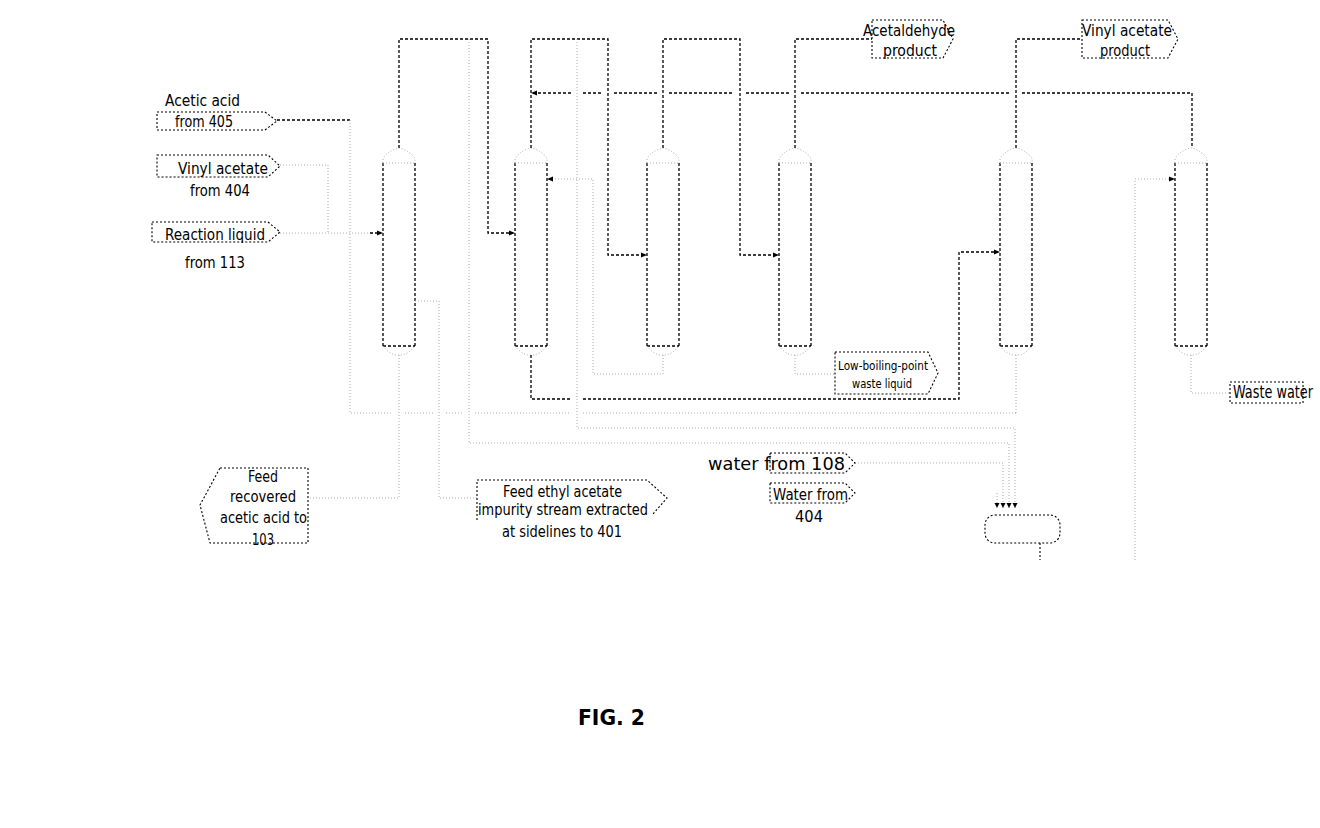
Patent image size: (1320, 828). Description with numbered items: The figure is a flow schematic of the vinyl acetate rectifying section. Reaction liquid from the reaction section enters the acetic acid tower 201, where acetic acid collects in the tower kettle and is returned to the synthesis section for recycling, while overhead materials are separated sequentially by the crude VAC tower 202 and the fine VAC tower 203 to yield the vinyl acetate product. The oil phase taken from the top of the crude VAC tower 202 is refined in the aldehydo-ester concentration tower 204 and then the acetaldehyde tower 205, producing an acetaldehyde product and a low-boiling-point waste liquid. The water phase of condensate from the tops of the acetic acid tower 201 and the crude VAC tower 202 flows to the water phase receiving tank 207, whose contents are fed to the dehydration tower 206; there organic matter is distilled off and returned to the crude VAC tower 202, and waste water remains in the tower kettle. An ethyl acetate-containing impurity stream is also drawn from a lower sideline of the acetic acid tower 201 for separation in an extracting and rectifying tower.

The acetic acid tower 201 is at (372, 233).
The crude VAC tower 202 is at (509, 233).
The fine VAC tower 203 is at (994, 252).
The aldehydo-ester concentration tower 204 is at (641, 255).
The acetaldehyde tower 205 is at (773, 255).
The dehydration tower 206 is at (1169, 179).
The water phase receiving tank 207 is at (1040, 545).